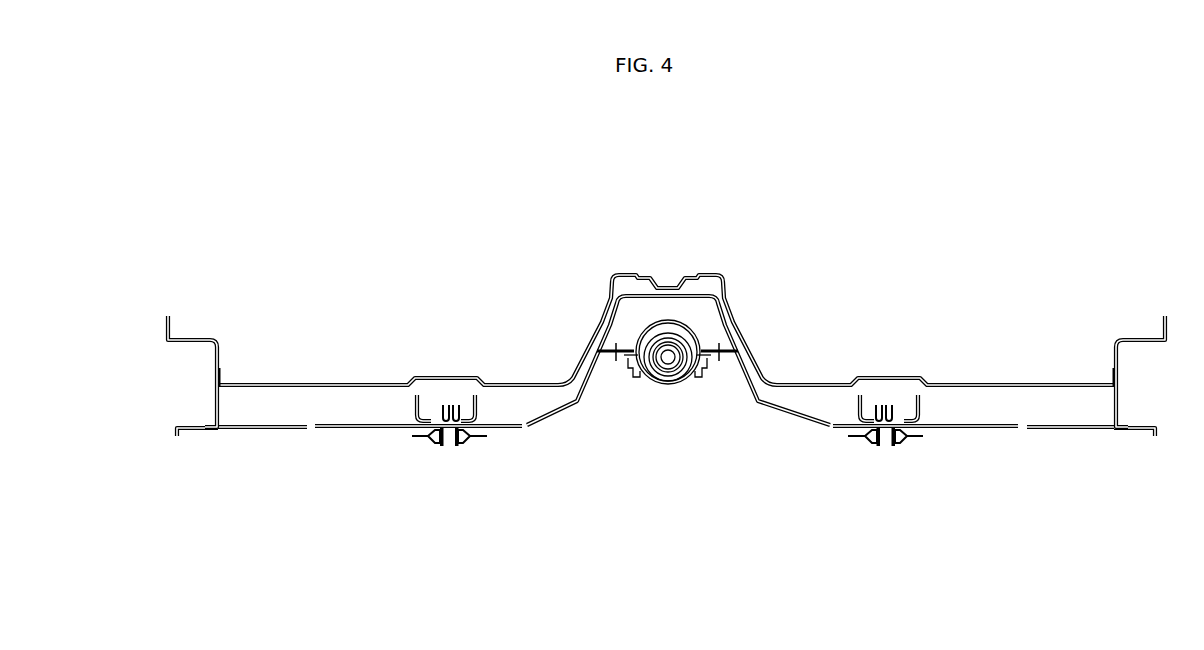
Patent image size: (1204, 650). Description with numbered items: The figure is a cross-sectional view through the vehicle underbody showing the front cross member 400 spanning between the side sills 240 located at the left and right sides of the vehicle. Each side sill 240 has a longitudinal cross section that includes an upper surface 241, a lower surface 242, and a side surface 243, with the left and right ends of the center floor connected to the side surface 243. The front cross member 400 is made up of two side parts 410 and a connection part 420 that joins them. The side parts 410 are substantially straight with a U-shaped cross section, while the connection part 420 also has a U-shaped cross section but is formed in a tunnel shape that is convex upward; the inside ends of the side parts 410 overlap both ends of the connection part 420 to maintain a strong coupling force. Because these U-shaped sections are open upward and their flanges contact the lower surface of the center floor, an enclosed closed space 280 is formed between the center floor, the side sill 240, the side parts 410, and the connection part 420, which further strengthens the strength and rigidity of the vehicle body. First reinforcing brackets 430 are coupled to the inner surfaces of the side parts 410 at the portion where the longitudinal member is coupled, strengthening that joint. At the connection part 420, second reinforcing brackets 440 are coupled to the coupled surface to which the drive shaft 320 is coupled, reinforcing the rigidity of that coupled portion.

The side sill 240 is at (186, 331).
The upper surface 241 is at (214, 340).
The lower surface 242 is at (190, 432).
The side surface 243 is at (221, 360).
The enclosed closed space 280 is at (357, 411).
The drive shaft 320 is at (671, 371).
The front cross member 400 is at (789, 419).
The side part 410 is at (276, 429).
The connection part 420 is at (668, 318).
The first reinforcing bracket 430 is at (415, 408).
The second reinforcing bracket 440 is at (604, 349).